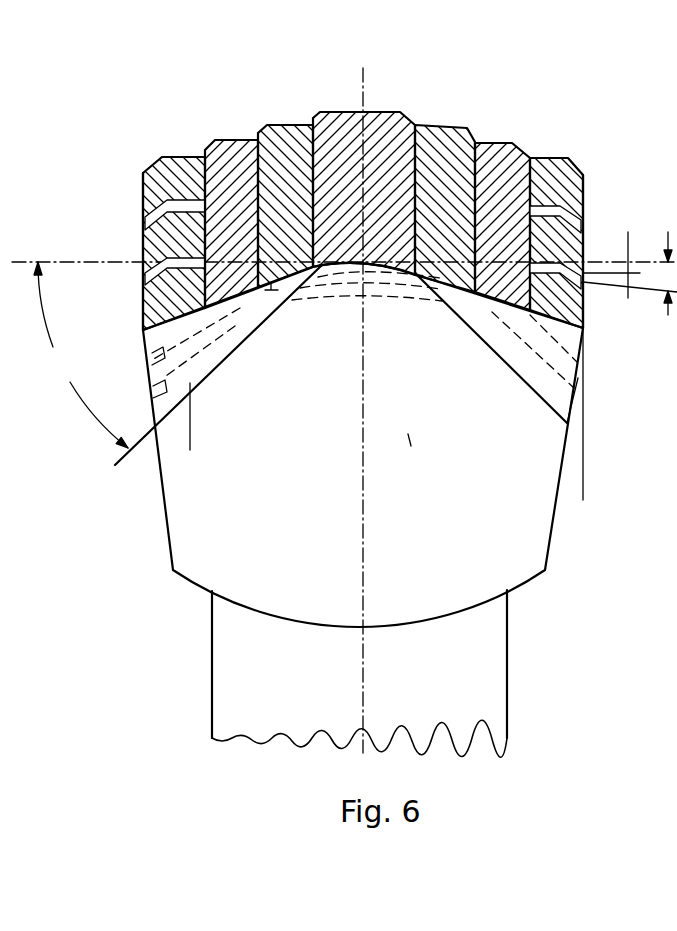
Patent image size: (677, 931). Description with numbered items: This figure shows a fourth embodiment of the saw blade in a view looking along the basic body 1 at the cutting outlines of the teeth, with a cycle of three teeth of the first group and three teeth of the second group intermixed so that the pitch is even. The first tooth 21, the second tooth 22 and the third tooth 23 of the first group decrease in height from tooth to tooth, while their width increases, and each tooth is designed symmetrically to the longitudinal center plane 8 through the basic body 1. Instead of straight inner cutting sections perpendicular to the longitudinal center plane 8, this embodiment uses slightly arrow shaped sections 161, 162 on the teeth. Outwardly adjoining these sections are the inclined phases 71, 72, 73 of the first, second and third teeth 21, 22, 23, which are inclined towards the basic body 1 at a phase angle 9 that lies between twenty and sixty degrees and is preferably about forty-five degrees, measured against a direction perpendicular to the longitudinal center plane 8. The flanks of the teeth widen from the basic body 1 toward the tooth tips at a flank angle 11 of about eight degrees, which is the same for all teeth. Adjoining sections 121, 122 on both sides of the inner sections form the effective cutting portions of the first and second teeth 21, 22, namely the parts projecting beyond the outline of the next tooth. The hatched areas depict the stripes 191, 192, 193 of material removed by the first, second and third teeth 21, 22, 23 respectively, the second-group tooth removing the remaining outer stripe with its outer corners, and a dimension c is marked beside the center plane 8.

The basic body 1 is at (466, 687).
The first tooth 21 is at (410, 443).
The second tooth 22 is at (578, 378).
The third tooth 23 is at (580, 365).
The phase of the first tooth 71 is at (190, 450).
The phase of the second tooth 72 is at (153, 396).
The phase of the third tooth 73 is at (152, 362).
The longitudinal center plane 8 is at (363, 672).
The phase angle 9 is at (353, 340).
The flank angle 11 is at (532, 482).
The adjoining section of the first tooth 121 is at (312, 257).
The adjoining section of the second tooth 122 is at (185, 153).
The arrow shaped section of the first tooth 161 is at (350, 262).
The arrow shaped section of the second tooth 162 is at (256, 232).
The stripe of material removed by the first tooth 191 is at (380, 187).
The stripe of material removed by the second tooth 192 is at (437, 178).
The stripe of material removed by the third tooth 193 is at (193, 52).
The distance c is at (636, 265).